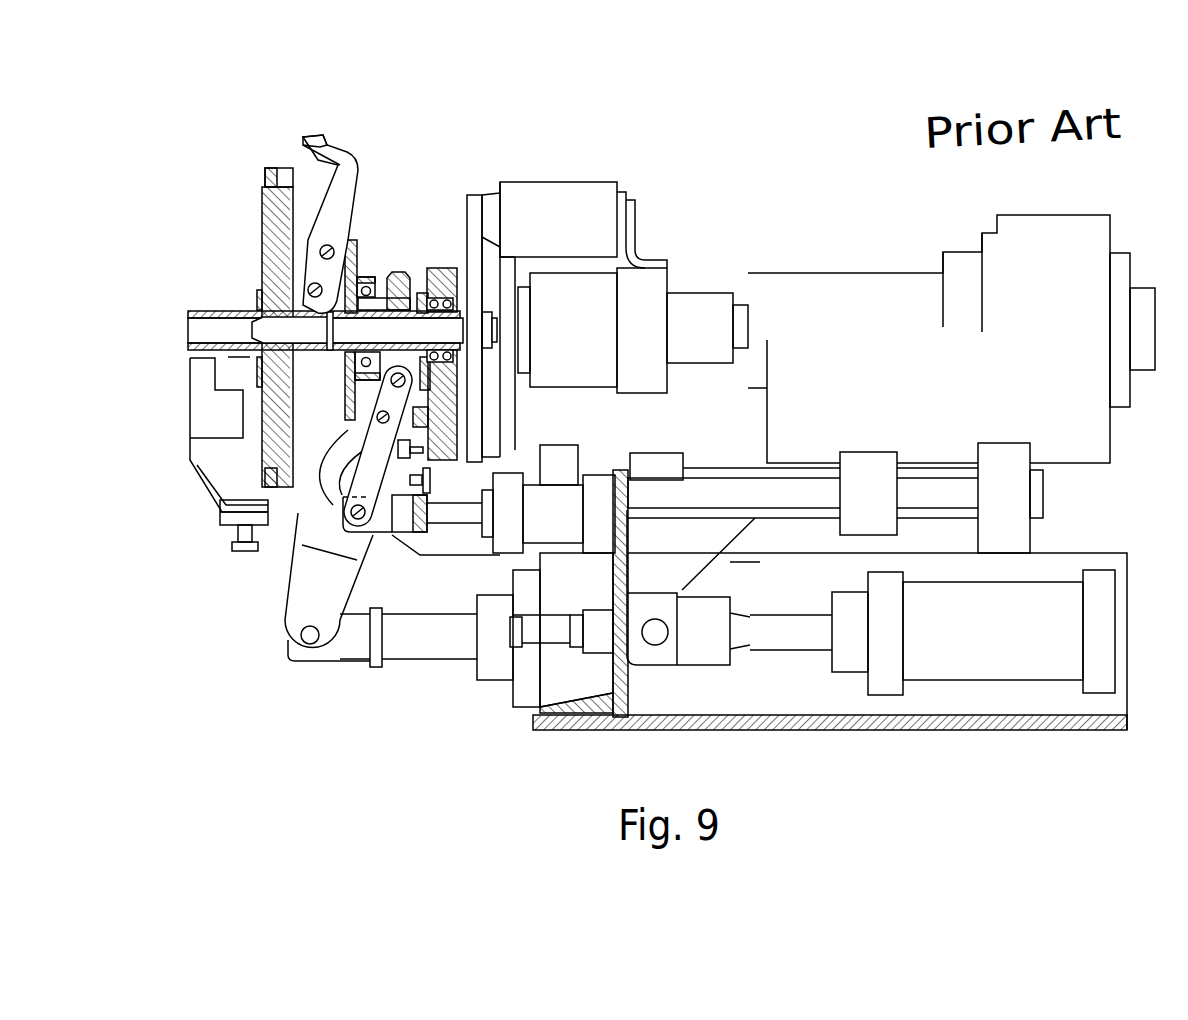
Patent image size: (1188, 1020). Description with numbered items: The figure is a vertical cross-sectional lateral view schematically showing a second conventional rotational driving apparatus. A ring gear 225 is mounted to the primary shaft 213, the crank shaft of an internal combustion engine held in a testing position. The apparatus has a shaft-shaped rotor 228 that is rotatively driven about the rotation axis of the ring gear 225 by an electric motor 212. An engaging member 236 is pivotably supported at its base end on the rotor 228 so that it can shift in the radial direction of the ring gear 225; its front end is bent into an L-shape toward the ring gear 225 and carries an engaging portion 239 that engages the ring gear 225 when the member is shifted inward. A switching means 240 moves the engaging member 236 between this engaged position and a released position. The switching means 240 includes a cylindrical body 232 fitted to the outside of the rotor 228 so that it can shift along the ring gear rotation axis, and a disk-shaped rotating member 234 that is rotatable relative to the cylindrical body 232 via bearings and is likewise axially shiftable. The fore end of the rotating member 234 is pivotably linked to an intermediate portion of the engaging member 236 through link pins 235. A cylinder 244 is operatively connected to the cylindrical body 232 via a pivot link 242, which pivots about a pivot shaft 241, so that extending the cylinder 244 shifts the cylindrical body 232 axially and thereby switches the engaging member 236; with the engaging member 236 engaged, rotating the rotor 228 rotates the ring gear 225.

The electric motor 212 is at (825, 290).
The primary shaft 213 is at (218, 310).
The ring gear 225 is at (267, 187).
The rotor 228 is at (355, 332).
The cylindrical body 232 is at (393, 272).
The rotating member 234 is at (365, 228).
The link pins 235 is at (328, 262).
The engaging member 236 is at (304, 202).
The engaging portion 239 is at (303, 157).
The switching means 240 is at (477, 168).
The pivot shaft 241 is at (297, 513).
The pivot link 242 is at (390, 537).
The cylinder 244 is at (563, 527).